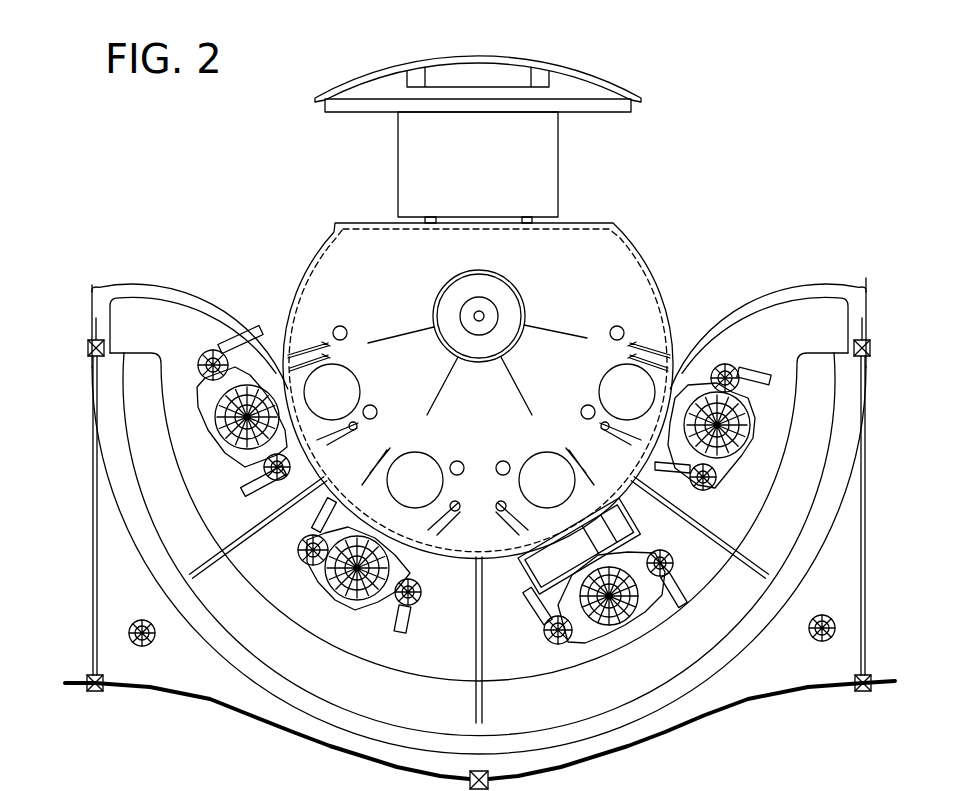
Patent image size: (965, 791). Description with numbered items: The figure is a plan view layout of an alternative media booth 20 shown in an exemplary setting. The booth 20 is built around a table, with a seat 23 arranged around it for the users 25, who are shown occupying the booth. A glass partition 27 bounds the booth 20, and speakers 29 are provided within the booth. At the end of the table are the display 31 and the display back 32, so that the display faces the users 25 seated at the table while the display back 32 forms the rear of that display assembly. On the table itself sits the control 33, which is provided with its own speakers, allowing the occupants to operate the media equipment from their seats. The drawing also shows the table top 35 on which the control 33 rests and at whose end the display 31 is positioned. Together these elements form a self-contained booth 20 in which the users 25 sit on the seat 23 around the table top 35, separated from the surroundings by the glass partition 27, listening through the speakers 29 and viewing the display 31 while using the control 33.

The booth 20 is at (776, 206).
The seat 23 is at (828, 310).
The users 25 is at (547, 640).
The glass partition 27 is at (862, 403).
The speakers 29 is at (817, 610).
The display 31 is at (587, 105).
The display back 32 is at (597, 73).
The control 33 is at (502, 275).
The table top 35 is at (553, 333).